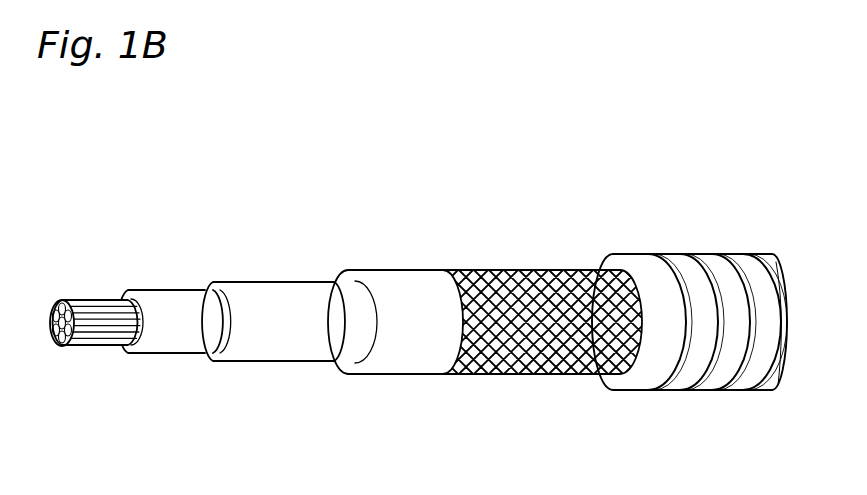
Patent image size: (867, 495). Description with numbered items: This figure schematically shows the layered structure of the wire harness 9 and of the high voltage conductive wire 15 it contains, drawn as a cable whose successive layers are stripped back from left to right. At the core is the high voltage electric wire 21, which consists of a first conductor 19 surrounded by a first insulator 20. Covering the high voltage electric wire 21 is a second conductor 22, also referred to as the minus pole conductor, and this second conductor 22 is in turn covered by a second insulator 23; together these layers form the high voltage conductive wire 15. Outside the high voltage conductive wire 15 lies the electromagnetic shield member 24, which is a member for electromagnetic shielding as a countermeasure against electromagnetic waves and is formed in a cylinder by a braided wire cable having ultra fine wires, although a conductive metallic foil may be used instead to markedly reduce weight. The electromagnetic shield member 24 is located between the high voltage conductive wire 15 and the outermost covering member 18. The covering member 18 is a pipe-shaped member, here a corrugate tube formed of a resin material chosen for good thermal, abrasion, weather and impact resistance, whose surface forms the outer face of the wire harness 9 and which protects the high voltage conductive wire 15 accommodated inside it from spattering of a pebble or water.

The wire harness 9 is at (738, 166).
The high voltage conductive wire 15 is at (276, 232).
The covering member 18 is at (690, 392).
The first conductor 19 is at (103, 300).
The first insulator 20 is at (165, 298).
The high voltage electric wire 21 is at (192, 222).
The second conductor 22 is at (277, 355).
The second insulator 23 is at (395, 295).
The electromagnetic shield member 24 is at (518, 375).